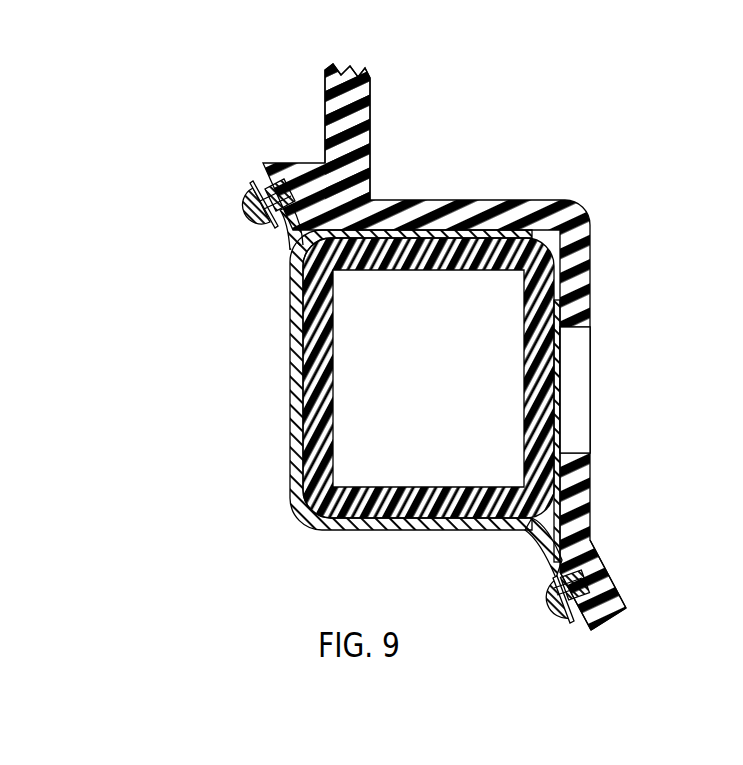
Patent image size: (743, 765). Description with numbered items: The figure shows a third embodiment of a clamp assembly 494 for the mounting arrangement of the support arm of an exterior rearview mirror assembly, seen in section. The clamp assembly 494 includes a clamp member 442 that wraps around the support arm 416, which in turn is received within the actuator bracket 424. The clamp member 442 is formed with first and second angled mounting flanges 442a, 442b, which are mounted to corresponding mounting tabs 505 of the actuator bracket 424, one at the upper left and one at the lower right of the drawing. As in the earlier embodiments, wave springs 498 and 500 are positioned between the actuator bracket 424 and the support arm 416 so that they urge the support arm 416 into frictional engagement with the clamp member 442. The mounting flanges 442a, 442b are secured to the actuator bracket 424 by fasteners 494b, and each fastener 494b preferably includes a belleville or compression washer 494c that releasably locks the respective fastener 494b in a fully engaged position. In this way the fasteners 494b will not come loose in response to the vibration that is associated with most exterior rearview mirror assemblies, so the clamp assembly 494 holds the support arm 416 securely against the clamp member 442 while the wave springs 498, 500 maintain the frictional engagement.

The actuator bracket 424 is at (369, 117).
The angled mounting flange 442b is at (265, 165).
The wave spring 500 is at (422, 232).
The support arm 416 is at (486, 238).
The clamp member 442 is at (289, 334).
The wave spring 498 is at (558, 361).
The belleville or compression washer 494c is at (598, 555).
The mounting tab 505 is at (613, 619).
The angled mounting flange 442a is at (548, 547).
The fastener 494b is at (553, 621).
The clamp assembly 494 is at (284, 550).